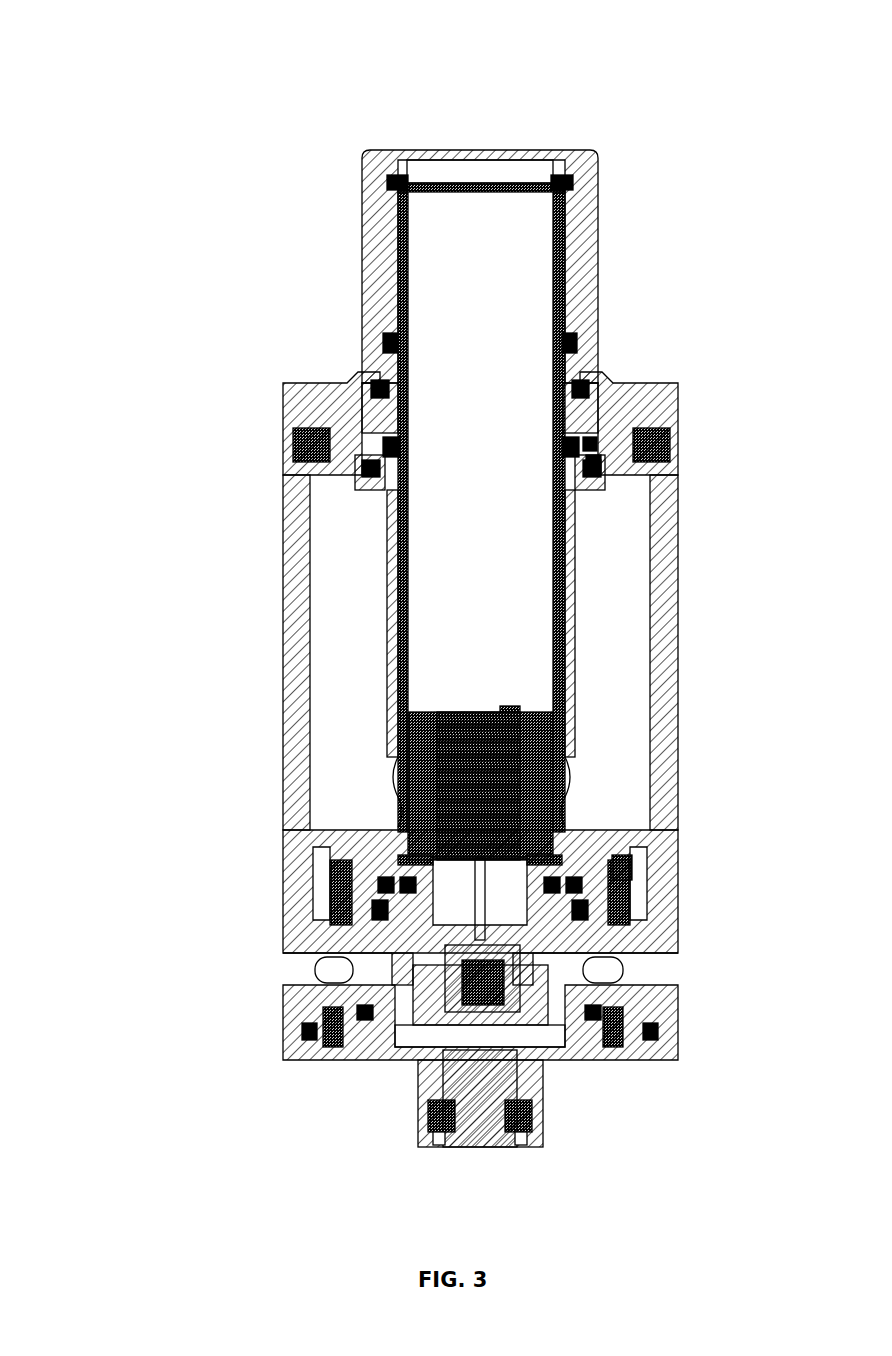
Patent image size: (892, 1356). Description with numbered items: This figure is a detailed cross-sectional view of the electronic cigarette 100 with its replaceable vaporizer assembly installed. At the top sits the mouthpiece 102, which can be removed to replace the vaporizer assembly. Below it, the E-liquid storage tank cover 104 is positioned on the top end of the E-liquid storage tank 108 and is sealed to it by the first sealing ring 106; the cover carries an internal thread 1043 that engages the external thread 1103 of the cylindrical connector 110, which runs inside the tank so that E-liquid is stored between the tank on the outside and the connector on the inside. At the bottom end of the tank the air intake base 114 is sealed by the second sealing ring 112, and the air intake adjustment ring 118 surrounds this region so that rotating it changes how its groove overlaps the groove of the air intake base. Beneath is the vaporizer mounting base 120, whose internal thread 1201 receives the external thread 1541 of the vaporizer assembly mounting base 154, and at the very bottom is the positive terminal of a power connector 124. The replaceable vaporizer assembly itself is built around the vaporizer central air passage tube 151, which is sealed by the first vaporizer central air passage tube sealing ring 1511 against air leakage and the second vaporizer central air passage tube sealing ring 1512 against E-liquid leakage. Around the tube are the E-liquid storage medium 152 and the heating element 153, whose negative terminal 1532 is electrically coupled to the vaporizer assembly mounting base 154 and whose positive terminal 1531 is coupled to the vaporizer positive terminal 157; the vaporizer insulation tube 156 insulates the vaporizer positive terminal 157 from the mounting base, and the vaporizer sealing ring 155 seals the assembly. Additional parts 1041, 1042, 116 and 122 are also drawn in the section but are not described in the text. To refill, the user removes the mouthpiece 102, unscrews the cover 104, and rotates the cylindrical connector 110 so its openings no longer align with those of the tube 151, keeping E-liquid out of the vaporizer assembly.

The electronic cigarette 100 is at (96, 76).
The mouthpiece 102 is at (362, 268).
The E-liquid storage tank cover 104 is at (310, 400).
The first seal ring 1041 is at (378, 383).
The second seal ring 1042 is at (362, 477).
The internal thread 1043 is at (365, 440).
The first sealing ring 106 is at (313, 445).
The E-liquid storage tank 108 is at (290, 557).
The cylindrical connector 110 is at (395, 665).
The external thread 1103 is at (593, 452).
The second sealing ring 112 is at (368, 962).
The air intake base 114 is at (385, 835).
The seal ring 116 is at (378, 915).
The air intake adjustment ring 118 is at (290, 1000).
The vaporizer mounting base 120 is at (370, 1052).
The internal thread 1201 is at (398, 890).
The nut 122 is at (440, 1105).
The positive terminal of a power connector 124 is at (455, 1130).
The vaporizer central air passage tube 151 is at (583, 236).
The first vaporizer central air passage tube sealing ring 1511 is at (578, 348).
The second vaporizer central air passage tube sealing ring 1512 is at (590, 440).
The E-liquid storage medium 152 is at (528, 773).
The heating element 153 is at (487, 830).
The positive terminal 1531 is at (485, 890).
The negative terminal 1532 is at (513, 712).
The vaporizer assembly mounting base 154 is at (545, 865).
The external thread 1541 is at (575, 900).
The vaporizer sealing ring 155 is at (548, 893).
The vaporizer insulation tube 156 is at (545, 990).
The vaporizer positive terminal 157 is at (485, 1010).